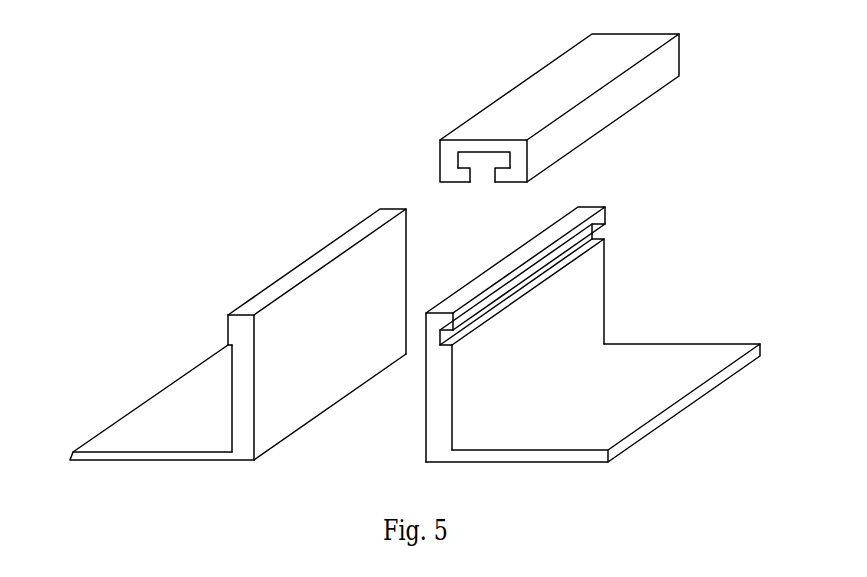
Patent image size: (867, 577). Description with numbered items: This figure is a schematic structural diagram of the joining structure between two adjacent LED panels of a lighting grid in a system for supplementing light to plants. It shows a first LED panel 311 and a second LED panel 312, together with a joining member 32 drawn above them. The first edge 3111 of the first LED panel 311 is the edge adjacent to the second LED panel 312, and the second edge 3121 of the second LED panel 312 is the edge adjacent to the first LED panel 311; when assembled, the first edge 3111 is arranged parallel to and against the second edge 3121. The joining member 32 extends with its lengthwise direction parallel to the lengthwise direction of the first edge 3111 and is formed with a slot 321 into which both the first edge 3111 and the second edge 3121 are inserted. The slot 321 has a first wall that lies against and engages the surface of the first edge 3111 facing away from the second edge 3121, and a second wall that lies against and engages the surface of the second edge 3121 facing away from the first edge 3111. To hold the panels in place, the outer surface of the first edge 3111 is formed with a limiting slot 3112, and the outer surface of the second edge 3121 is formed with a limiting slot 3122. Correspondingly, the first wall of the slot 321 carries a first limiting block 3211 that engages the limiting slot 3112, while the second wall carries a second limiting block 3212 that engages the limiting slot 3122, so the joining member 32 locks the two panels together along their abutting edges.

The joining member 32 is at (600, 113).
The slot 321 is at (488, 157).
The second limiting block 3212 is at (465, 175).
The first limiting block 3211 is at (505, 177).
The first LED panel 311 is at (678, 326).
The first edge 3111 is at (585, 293).
The limiting slot 3112 is at (605, 238).
The second LED panel 312 is at (123, 388).
The second edge 3121 is at (240, 397).
The limiting slot 3122 is at (240, 342).